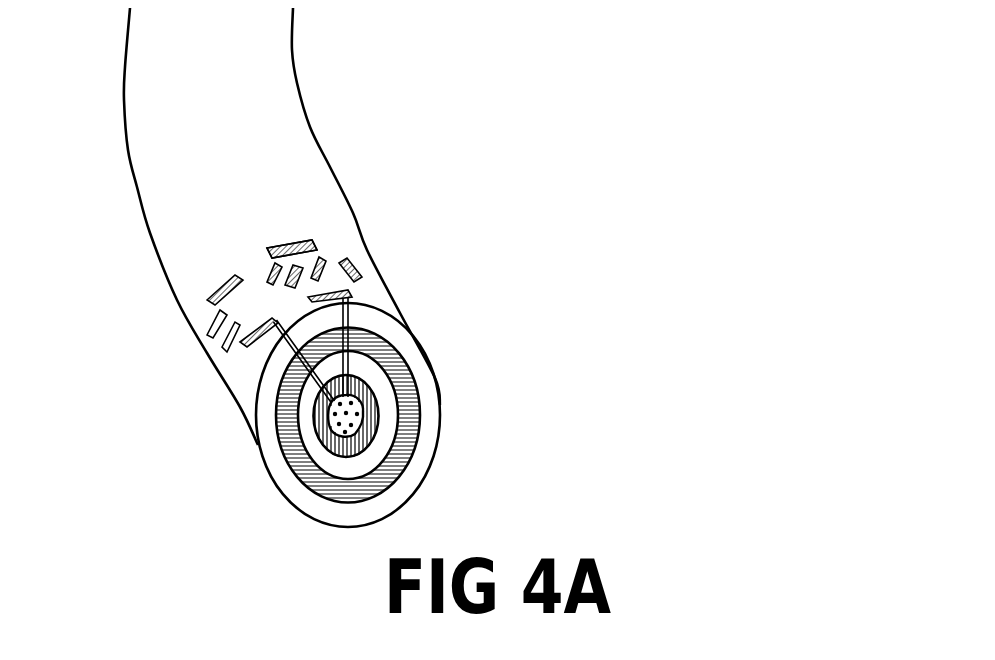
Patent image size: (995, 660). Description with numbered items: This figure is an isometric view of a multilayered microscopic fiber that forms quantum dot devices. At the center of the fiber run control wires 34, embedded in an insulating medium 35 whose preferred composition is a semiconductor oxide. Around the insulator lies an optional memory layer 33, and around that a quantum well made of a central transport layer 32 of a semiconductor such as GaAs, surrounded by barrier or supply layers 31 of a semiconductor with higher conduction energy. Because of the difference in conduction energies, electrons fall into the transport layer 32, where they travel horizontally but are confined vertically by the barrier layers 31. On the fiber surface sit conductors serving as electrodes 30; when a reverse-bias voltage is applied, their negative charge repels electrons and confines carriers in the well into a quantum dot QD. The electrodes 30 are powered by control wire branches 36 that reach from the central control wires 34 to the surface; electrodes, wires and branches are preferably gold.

The electrodes 30 is at (290, 266).
The quantum dot QD is at (300, 275).
The barrier or supply layers 31 is at (420, 352).
The transport layer 32 is at (410, 358).
The memory layer 33 is at (372, 397).
The control wires 34 is at (357, 416).
The insulating medium 35 is at (368, 433).
The control wire branches 36 is at (303, 360).